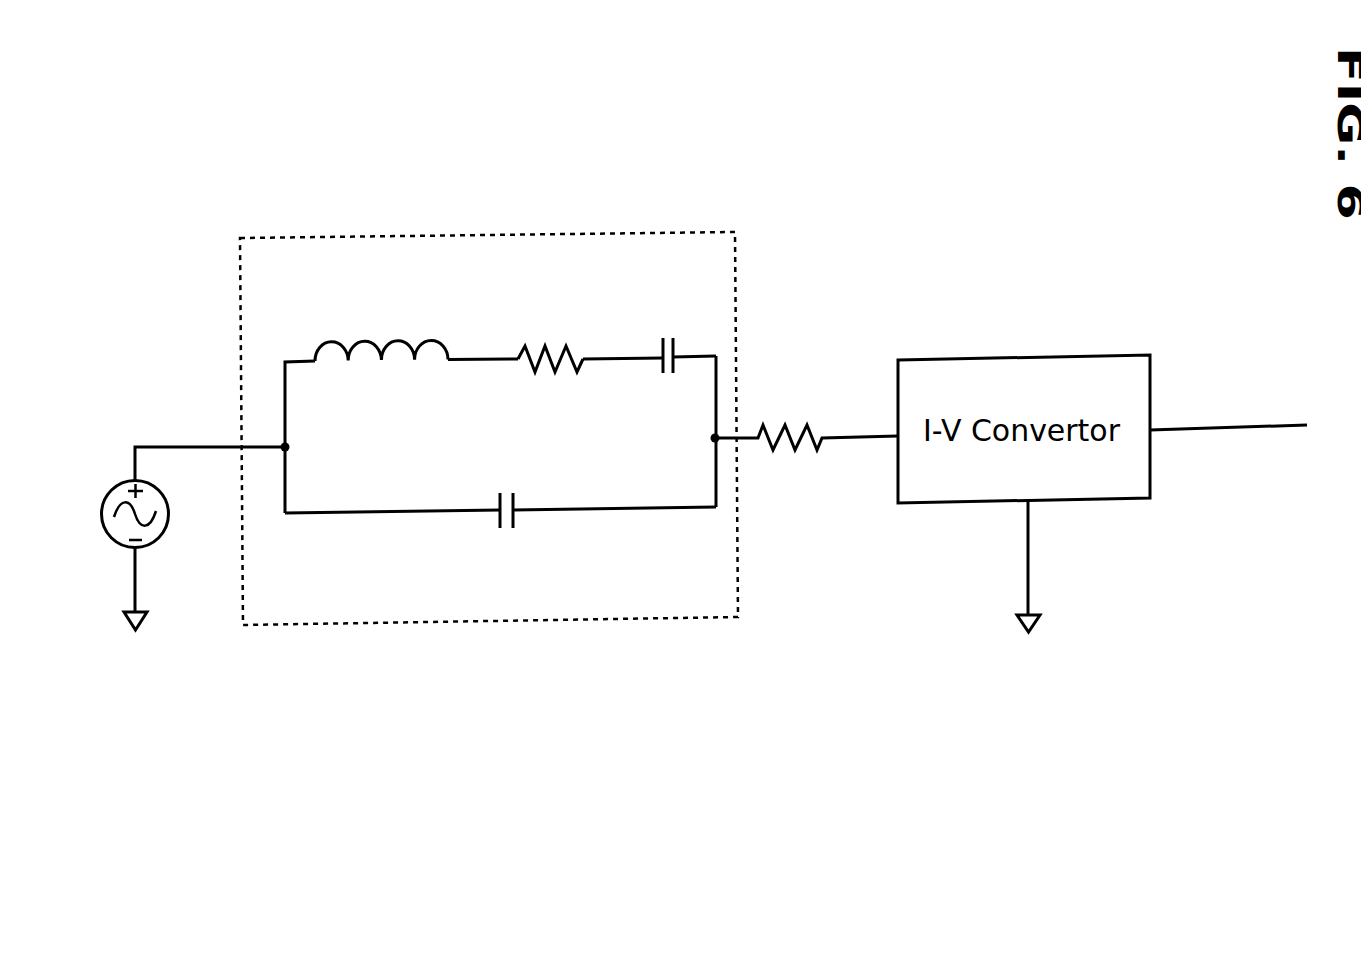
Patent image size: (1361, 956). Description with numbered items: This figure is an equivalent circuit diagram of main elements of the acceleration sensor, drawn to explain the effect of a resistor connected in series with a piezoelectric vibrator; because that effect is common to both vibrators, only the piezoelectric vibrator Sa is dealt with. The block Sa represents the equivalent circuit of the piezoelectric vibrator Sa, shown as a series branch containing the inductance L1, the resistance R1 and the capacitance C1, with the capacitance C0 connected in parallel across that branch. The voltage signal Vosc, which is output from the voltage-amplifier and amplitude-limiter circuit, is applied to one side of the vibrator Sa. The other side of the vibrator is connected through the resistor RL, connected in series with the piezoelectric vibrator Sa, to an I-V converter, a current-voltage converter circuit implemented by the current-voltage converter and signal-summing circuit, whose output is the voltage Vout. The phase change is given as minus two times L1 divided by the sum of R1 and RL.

The piezoelectric vibrator Sa is at (236, 232).
The inductance L1 is at (381, 333).
The resistance R1 is at (550, 338).
The capacitance C1 is at (668, 337).
The capacitance C0 is at (500, 529).
The resistor RL is at (806, 415).
The voltage signal Vosc is at (172, 522).
The output voltage Vout is at (1228, 412).